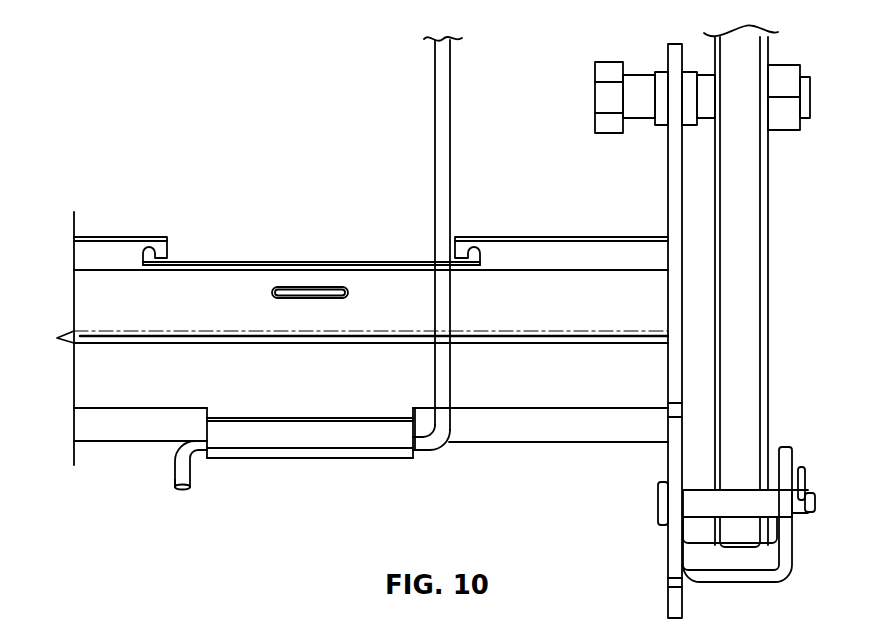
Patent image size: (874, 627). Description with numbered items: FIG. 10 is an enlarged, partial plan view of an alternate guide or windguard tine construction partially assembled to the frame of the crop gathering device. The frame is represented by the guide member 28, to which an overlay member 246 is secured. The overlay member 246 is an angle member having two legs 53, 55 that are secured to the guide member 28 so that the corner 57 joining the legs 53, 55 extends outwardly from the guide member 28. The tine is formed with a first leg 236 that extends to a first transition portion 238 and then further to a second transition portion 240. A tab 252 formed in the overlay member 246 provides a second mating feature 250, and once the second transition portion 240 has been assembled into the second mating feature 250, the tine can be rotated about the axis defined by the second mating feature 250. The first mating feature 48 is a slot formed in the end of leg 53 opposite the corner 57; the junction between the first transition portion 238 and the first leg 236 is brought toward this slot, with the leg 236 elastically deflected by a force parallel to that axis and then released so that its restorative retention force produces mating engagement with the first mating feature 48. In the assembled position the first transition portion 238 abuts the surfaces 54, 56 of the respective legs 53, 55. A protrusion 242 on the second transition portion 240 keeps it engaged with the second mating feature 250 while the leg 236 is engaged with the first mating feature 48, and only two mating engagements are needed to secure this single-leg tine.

The guide member 28 is at (610, 443).
The first mating feature 48 is at (455, 257).
The leg 53 is at (159, 295).
The surface 54 is at (100, 285).
The leg 55 is at (93, 390).
The surface 56 is at (115, 388).
The corner 57 is at (120, 331).
The first leg 236 is at (450, 171).
The first transition portion 238 is at (452, 385).
The second transition portion 240 is at (193, 438).
The protrusion 242 is at (197, 467).
The overlay member 246 is at (98, 250).
The second mating feature 250 is at (414, 459).
The tab 252 is at (300, 440).